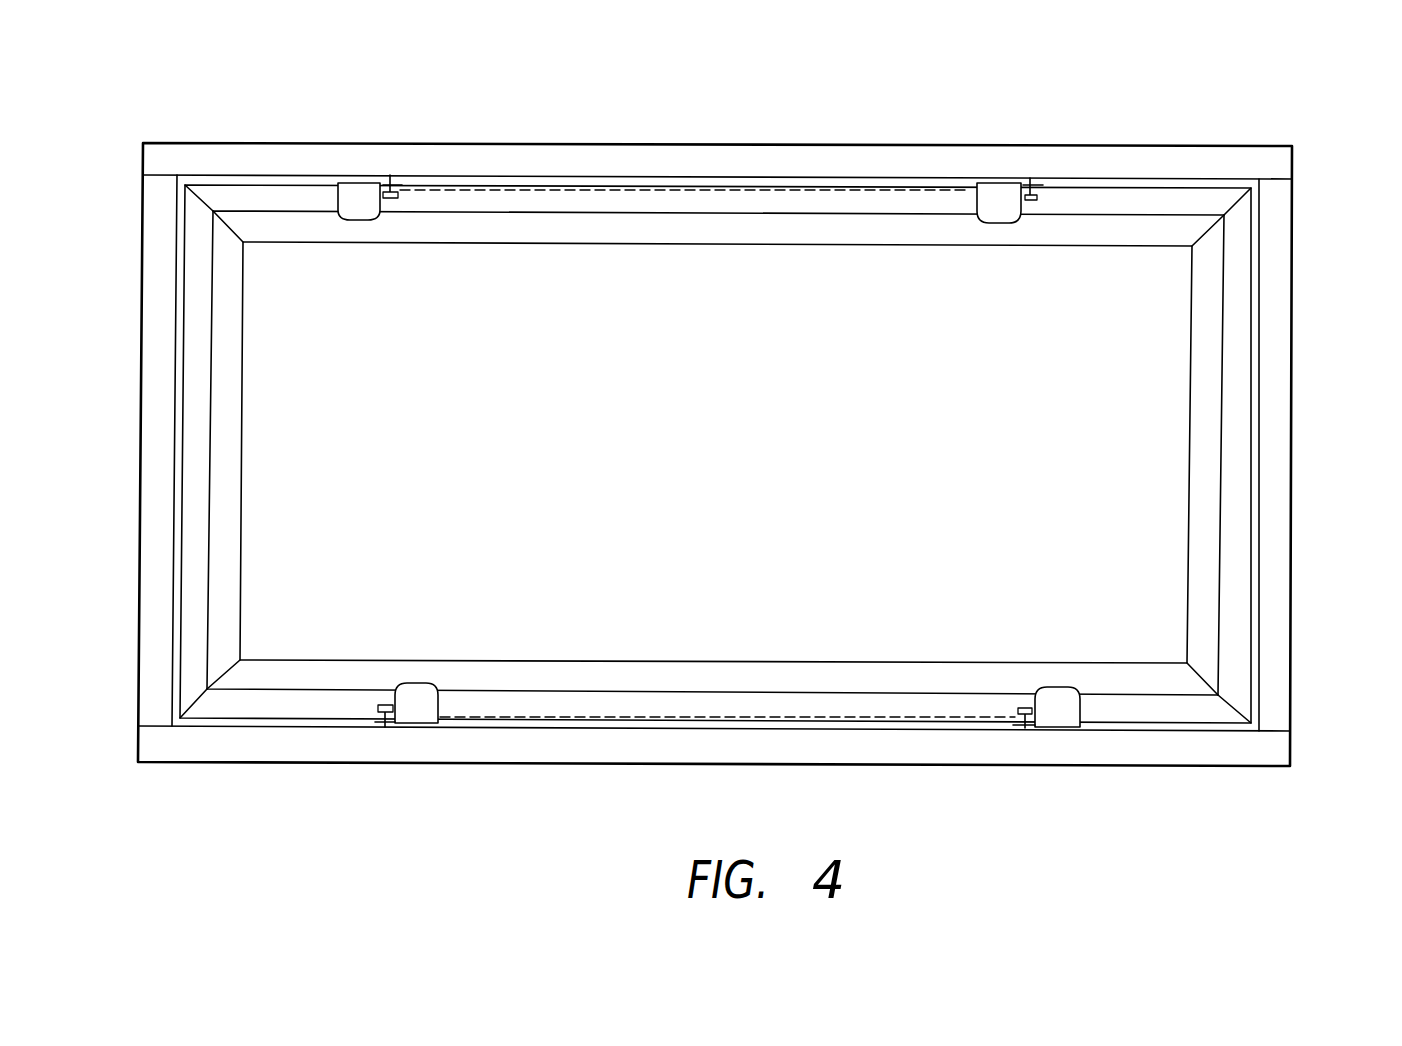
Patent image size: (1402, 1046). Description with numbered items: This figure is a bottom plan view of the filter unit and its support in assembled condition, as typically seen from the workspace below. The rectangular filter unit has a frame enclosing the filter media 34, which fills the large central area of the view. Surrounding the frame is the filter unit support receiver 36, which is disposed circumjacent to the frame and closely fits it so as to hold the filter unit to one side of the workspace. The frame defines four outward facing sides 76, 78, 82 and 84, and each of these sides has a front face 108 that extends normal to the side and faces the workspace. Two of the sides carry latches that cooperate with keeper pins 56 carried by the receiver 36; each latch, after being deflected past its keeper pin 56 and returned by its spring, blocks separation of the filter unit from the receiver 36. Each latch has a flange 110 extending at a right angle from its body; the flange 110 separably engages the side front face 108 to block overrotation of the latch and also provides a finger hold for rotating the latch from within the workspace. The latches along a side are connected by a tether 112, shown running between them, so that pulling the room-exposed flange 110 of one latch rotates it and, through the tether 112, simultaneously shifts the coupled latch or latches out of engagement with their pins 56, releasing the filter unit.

The filter media 34 is at (1012, 483).
The filter unit support receiver 36 is at (1294, 192).
The keeper pin 56 is at (1040, 190).
The outward facing side 76 is at (273, 717).
The outward facing side 78 is at (1250, 365).
The outward facing side 82 is at (800, 185).
The outward facing side 84 is at (178, 635).
The front face 108 is at (627, 200).
The flange 110 is at (1001, 195).
The tether 112 is at (877, 718).